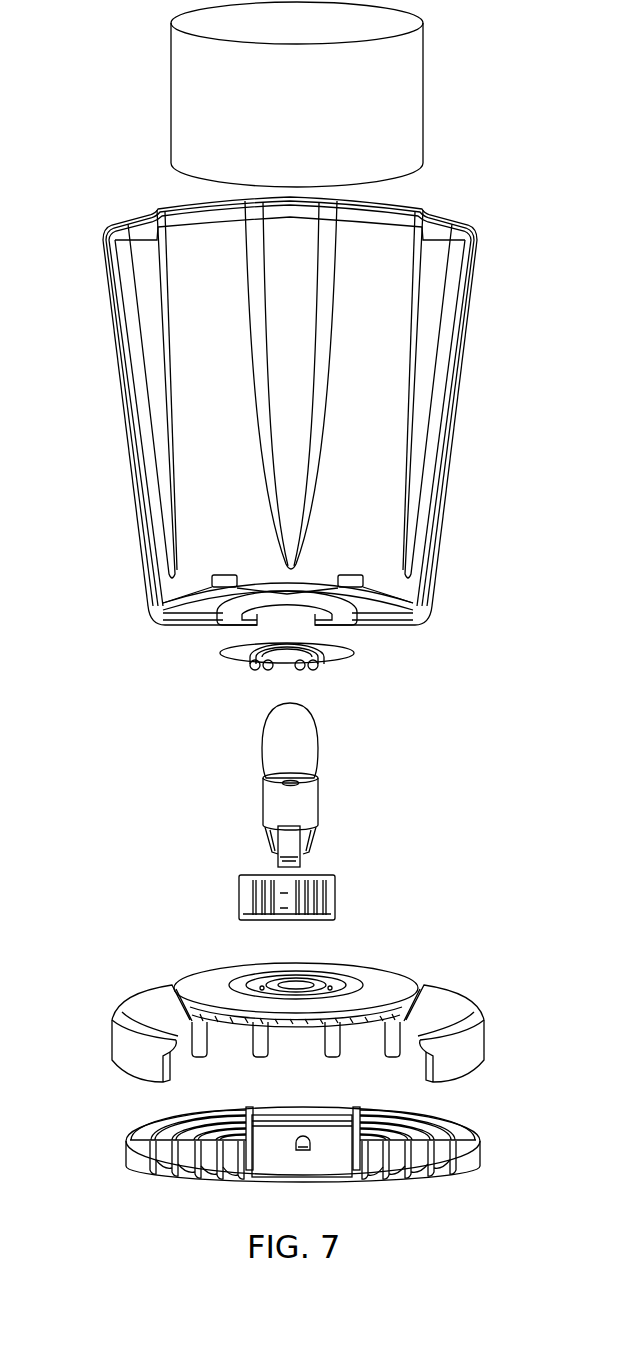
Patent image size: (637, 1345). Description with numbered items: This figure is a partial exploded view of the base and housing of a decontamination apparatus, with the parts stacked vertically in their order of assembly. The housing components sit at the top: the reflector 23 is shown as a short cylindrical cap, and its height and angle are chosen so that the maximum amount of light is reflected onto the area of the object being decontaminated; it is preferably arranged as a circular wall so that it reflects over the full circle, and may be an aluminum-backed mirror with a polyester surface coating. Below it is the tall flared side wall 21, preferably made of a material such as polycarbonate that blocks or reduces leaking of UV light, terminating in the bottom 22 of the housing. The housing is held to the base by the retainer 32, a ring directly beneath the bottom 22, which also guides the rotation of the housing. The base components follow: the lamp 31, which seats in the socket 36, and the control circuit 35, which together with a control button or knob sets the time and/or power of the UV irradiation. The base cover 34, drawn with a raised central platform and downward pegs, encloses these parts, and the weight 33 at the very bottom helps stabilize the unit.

The reflector 23 is at (171, 86).
The side wall 21 is at (128, 431).
The bottom 22 is at (160, 612).
The retainer 32 is at (222, 654).
The lamp 31 is at (262, 738).
The socket 36 is at (263, 803).
The control circuit 35 is at (239, 898).
The base cover 34 is at (112, 1030).
The weight 33 is at (126, 1155).